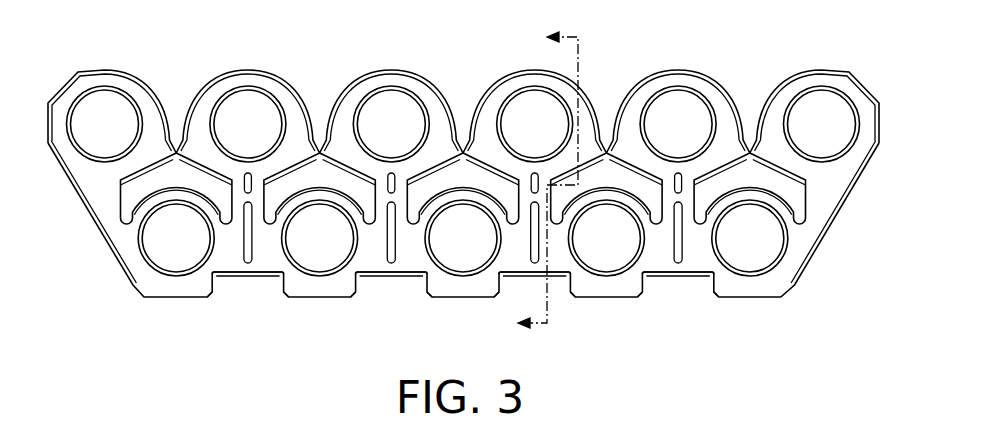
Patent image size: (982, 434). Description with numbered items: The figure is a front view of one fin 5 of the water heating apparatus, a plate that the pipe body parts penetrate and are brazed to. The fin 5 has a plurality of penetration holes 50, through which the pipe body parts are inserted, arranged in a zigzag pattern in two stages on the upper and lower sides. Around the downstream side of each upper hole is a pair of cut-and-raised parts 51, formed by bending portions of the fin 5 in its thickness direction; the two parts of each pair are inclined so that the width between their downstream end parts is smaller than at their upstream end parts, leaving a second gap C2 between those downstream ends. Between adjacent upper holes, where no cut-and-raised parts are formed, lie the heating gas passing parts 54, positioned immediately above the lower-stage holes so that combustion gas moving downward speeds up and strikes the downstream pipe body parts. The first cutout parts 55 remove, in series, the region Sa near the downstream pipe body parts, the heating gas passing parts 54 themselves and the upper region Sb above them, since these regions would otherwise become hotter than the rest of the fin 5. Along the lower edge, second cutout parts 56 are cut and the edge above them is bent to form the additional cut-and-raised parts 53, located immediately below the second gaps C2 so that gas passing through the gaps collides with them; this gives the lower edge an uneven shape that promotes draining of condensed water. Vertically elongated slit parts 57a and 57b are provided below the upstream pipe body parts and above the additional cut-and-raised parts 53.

The fin 5 is at (100, 27).
The penetration hole 50 is at (98, 107).
The cut-and-raised part 51 is at (272, 157).
The additional cut-and-raised part 53 is at (242, 277).
The heating gas passing part 54 is at (176, 150).
The first cutout part 55 is at (142, 190).
The second cutout part 56 is at (260, 287).
The slit part 57a is at (255, 183).
The slit part 57b is at (255, 236).
The second gap C2 is at (528, 181).
The region Sa is at (744, 176).
The upper region Sb is at (747, 80).